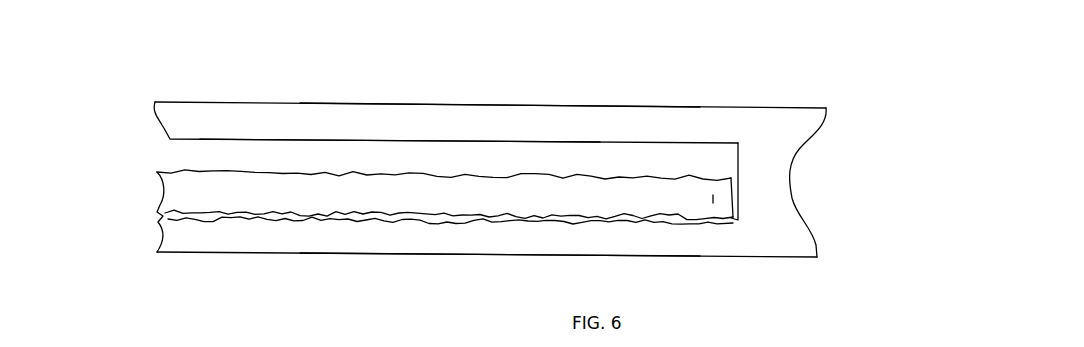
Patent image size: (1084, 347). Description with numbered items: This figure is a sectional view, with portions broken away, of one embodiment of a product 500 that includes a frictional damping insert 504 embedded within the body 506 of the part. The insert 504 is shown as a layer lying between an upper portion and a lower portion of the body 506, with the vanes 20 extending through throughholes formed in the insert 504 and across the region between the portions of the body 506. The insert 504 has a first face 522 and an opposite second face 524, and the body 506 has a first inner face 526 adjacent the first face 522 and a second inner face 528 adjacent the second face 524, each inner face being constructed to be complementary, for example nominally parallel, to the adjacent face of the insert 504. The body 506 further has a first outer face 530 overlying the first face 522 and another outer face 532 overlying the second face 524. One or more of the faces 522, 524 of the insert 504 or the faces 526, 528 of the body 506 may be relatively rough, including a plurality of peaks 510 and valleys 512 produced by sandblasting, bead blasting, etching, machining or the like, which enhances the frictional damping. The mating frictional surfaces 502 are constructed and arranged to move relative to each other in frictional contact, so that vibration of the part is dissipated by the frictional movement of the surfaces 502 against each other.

The product 500 is at (848, 70).
The frictional surfaces 502 is at (182, 206).
The frictional damping insert 504 is at (713, 199).
The body 506 is at (173, 110).
The peaks 510 is at (454, 208).
The valleys 512 is at (636, 204).
The vanes 20 is at (769, 160).
The first face 522 is at (415, 172).
The second face 524 is at (374, 218).
The first inner face 526 is at (302, 141).
The second inner face 528 is at (323, 220).
The first outer face 530 is at (490, 105).
The first outer face 532 is at (536, 256).